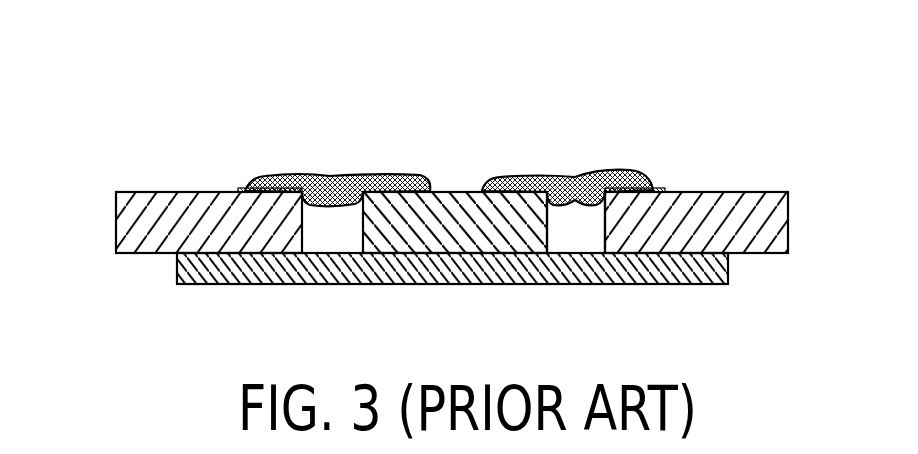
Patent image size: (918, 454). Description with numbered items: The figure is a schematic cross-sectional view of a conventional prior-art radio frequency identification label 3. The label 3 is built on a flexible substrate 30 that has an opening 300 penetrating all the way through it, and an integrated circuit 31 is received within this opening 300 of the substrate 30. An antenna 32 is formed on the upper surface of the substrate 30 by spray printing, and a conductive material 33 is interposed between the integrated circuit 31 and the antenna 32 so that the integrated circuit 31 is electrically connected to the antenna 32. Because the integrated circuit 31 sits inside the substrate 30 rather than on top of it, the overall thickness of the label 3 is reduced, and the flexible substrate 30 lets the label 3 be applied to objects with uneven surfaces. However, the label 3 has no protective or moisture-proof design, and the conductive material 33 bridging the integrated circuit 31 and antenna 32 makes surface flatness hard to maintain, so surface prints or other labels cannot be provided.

The radio frequency identification label 3 is at (797, 68).
The flexible substrate 30 is at (142, 224).
The opening 300 is at (576, 228).
The integrated circuit 31 is at (460, 200).
The antenna 32 is at (240, 190).
The conductive material 33 is at (333, 183).